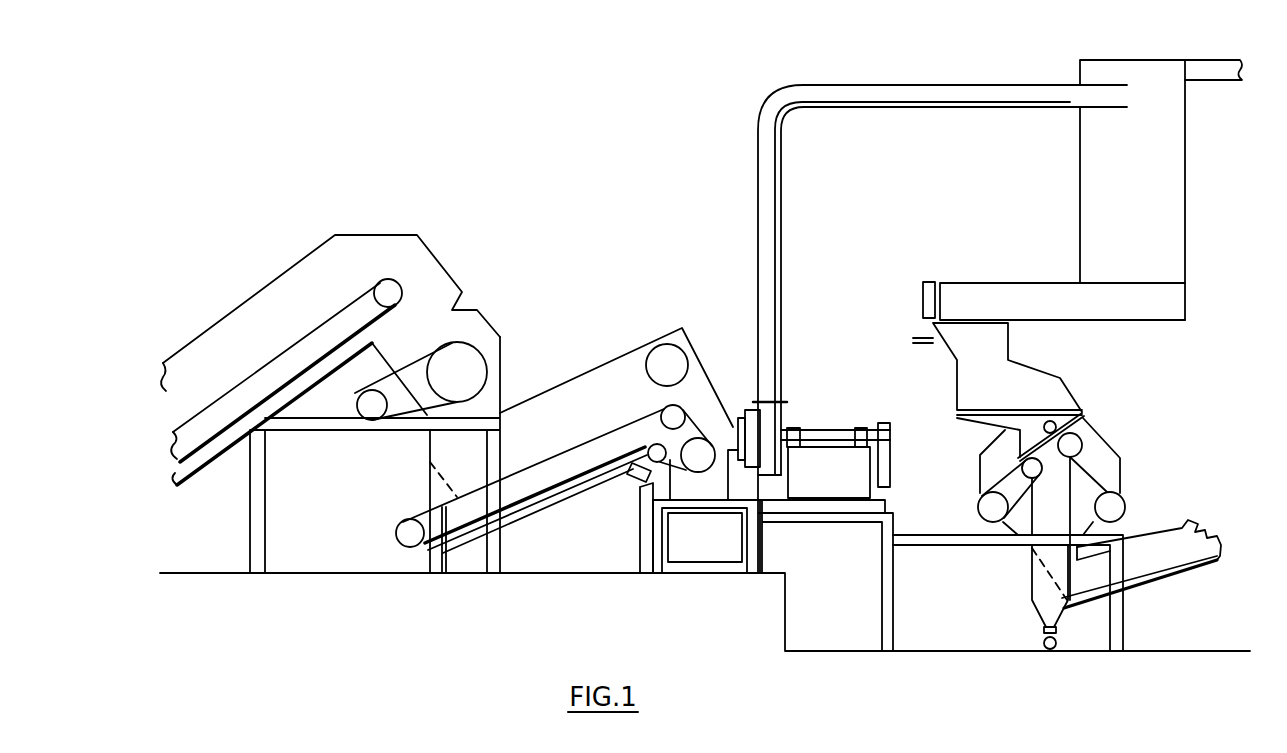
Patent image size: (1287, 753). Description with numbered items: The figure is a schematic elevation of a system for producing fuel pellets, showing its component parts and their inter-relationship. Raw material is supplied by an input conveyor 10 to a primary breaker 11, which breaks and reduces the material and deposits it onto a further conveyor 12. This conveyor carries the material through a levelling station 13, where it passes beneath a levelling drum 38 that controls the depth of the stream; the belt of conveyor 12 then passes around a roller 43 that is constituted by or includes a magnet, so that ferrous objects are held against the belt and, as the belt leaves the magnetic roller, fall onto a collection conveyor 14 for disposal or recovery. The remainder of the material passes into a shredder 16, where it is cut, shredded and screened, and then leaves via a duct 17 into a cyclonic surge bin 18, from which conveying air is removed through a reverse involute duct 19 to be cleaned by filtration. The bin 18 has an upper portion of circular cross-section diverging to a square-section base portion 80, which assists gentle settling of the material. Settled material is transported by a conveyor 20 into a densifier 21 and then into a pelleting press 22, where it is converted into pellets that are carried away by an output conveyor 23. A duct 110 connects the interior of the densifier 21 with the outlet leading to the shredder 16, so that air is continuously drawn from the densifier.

The input conveyor 10 is at (227, 395).
The primary breaker 11 is at (490, 312).
The further conveyor 12 is at (560, 450).
The levelling station 13 is at (700, 338).
The collection conveyor 14 is at (707, 550).
The shredder 16 is at (797, 418).
The duct 17 is at (776, 286).
The cyclonic surge bin 18 is at (1188, 214).
The duct 19 is at (1125, 58).
The conveyor 20 is at (971, 295).
The densifier 21 is at (1070, 378).
The pelleting press 22 is at (1109, 430).
The output conveyor 23 is at (1186, 518).
The levelling drum 38 is at (660, 346).
The roller 43 is at (702, 443).
The base portion 80 is at (1020, 434).
The duct 110 is at (918, 346).